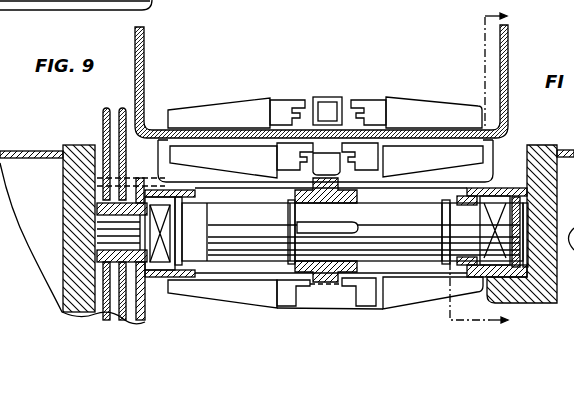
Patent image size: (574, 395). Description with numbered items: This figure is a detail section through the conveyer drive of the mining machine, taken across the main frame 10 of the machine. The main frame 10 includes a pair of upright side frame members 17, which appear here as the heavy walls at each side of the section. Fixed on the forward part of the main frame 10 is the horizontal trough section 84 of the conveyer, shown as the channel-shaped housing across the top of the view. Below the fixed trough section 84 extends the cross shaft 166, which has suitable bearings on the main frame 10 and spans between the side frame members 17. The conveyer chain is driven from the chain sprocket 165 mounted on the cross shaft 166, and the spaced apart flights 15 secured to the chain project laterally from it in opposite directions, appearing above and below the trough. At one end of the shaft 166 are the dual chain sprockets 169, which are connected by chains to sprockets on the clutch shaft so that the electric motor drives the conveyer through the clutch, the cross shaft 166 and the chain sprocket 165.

The main frame 10 is at (494, 169).
The flights 15 is at (437, 107).
The upright side frame members 17 is at (68, 144).
The horizontal trough section 84 is at (144, 62).
The chain sprocket 165 is at (312, 178).
The cross shaft 166 is at (372, 212).
The dual chain sprockets 169 is at (106, 110).